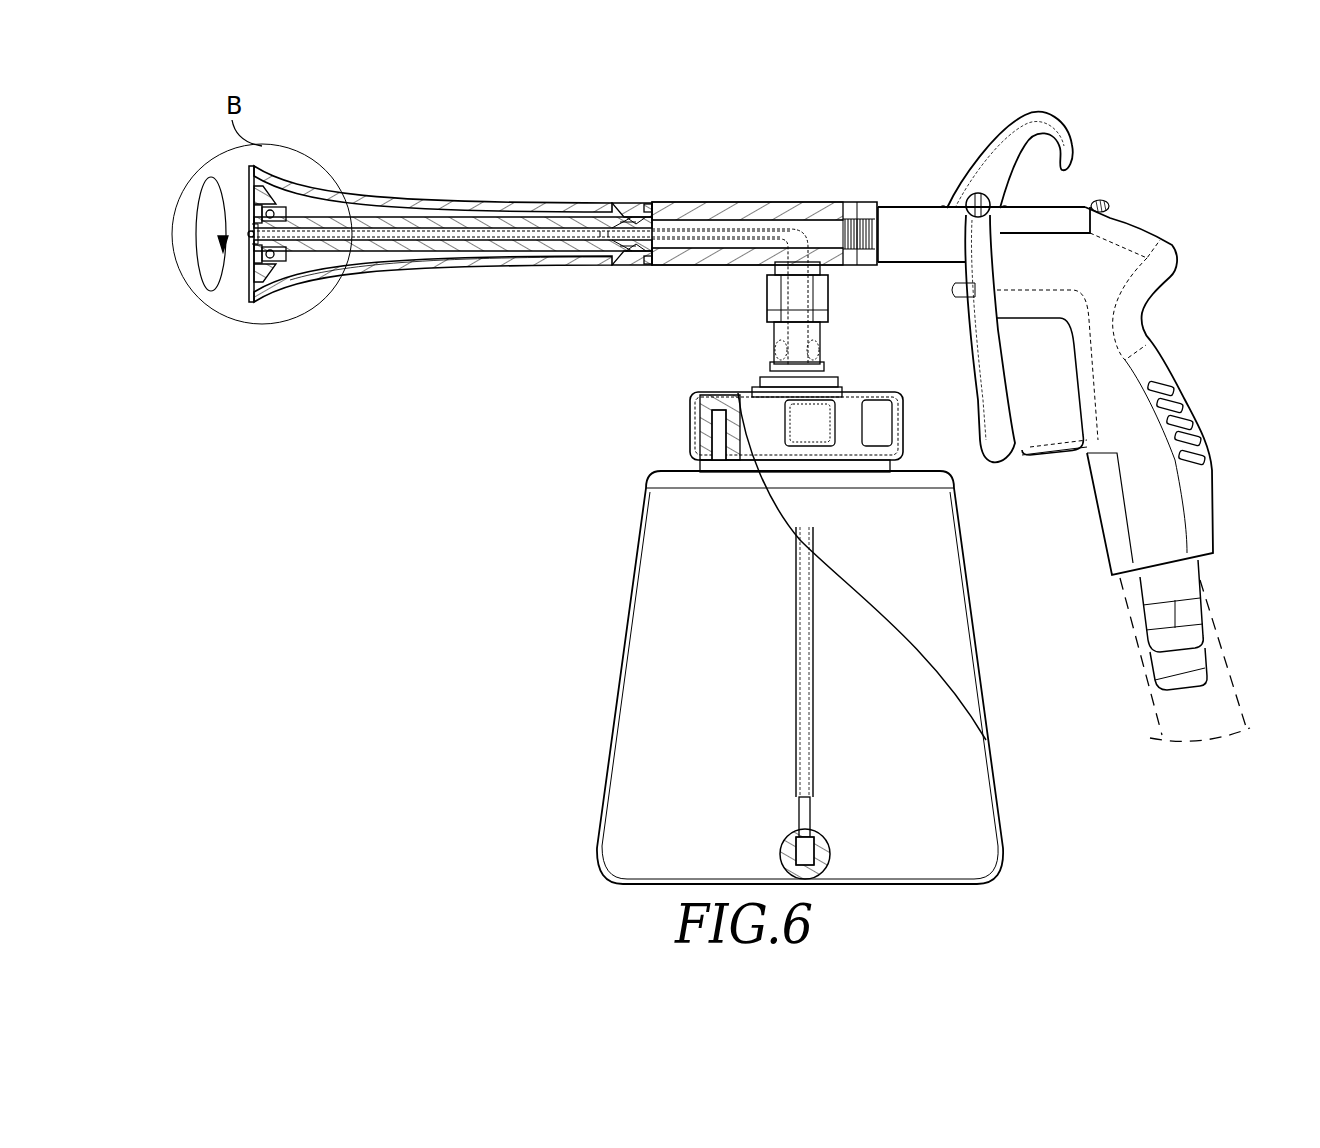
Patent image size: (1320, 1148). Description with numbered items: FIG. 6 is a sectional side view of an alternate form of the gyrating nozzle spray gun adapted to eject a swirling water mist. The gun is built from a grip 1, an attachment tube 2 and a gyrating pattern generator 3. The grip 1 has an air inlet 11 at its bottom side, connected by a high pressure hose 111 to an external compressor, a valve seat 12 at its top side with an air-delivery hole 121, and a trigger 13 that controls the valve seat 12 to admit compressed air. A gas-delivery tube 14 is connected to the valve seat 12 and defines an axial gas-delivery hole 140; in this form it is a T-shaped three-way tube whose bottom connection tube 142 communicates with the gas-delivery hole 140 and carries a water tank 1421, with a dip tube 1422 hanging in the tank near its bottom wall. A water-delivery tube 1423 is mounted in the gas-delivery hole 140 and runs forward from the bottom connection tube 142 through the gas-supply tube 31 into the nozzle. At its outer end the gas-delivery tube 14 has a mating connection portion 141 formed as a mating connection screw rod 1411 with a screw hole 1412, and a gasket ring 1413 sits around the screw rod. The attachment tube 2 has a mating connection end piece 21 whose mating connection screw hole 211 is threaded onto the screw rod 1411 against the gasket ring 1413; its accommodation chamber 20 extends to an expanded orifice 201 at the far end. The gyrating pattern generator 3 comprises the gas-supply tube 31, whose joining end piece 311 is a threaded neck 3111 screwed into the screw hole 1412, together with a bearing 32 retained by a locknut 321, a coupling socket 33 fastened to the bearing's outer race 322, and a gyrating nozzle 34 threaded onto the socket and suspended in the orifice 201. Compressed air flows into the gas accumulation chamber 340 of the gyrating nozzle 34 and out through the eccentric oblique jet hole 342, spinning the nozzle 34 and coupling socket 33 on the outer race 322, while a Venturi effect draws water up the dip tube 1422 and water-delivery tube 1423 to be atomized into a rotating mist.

The grip 1 is at (1122, 383).
The air inlet 11 is at (1183, 612).
The high pressure hose 111 is at (1250, 692).
The valve seat 12 is at (1010, 260).
The air-delivery hole 121 is at (866, 236).
The trigger 13 is at (993, 368).
The gas-delivery tube 14 is at (795, 205).
The gas-delivery hole 140 is at (830, 218).
The mating connection portion 141 is at (629, 165).
The mating connection screw rod 1411 is at (618, 209).
The screw hole 1412 is at (637, 214).
The gasket ring 1413 is at (652, 206).
The bottom connection tube 142 is at (772, 292).
The water tank 1421 is at (628, 588).
The dip tube 1422 is at (795, 694).
The water-delivery tube 1423 is at (742, 228).
The attachment tube 2 is at (488, 205).
The accommodation chamber 20 is at (342, 278).
The orifice 201 is at (258, 142).
The mating connection end piece 21 is at (568, 350).
The mating connection screw hole 211 is at (618, 262).
The gyrating pattern generator 3 is at (460, 309).
The gas-supply tube 31 is at (500, 243).
The joining end piece 311 is at (636, 322).
The threaded neck 3111 is at (636, 265).
The bearing 32 is at (335, 197).
The locknut 321 is at (276, 200).
The outer race 322 is at (290, 212).
The coupling socket 33 is at (295, 282).
The gyrating nozzle 34 is at (266, 268).
The gas accumulation chamber 340 is at (270, 260).
The oblique jet hole 342 is at (255, 262).